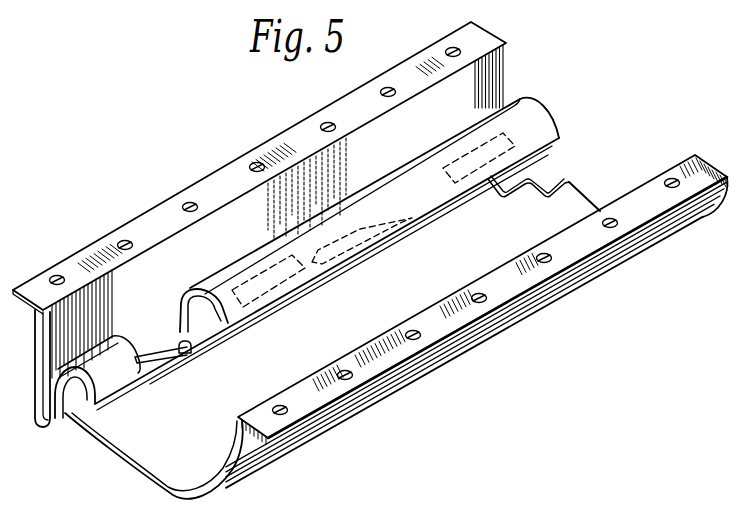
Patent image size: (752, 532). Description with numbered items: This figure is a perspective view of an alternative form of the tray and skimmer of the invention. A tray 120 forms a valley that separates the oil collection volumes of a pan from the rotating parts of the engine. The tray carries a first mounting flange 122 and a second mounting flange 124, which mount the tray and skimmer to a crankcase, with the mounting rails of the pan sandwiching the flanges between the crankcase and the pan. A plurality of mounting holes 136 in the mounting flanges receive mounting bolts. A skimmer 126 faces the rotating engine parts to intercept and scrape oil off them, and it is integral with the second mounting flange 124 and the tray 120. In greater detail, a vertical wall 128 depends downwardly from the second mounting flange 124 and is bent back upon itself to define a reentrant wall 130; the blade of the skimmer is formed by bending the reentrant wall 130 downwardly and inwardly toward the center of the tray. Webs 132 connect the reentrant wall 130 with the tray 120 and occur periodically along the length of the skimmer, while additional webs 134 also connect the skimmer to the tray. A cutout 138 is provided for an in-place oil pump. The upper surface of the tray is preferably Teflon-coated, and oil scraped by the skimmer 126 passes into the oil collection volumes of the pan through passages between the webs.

The tray 120 is at (551, 208).
The first mounting flange 122 is at (593, 242).
The second mounting flange 124 is at (295, 136).
The skimmer 126 is at (540, 124).
The vertical wall 128 is at (83, 313).
The reentrant wall 130 is at (62, 400).
The webs 132 is at (187, 353).
The additional webs 134 is at (275, 280).
The mounting holes 136 is at (481, 303).
The cutout 138 is at (528, 182).